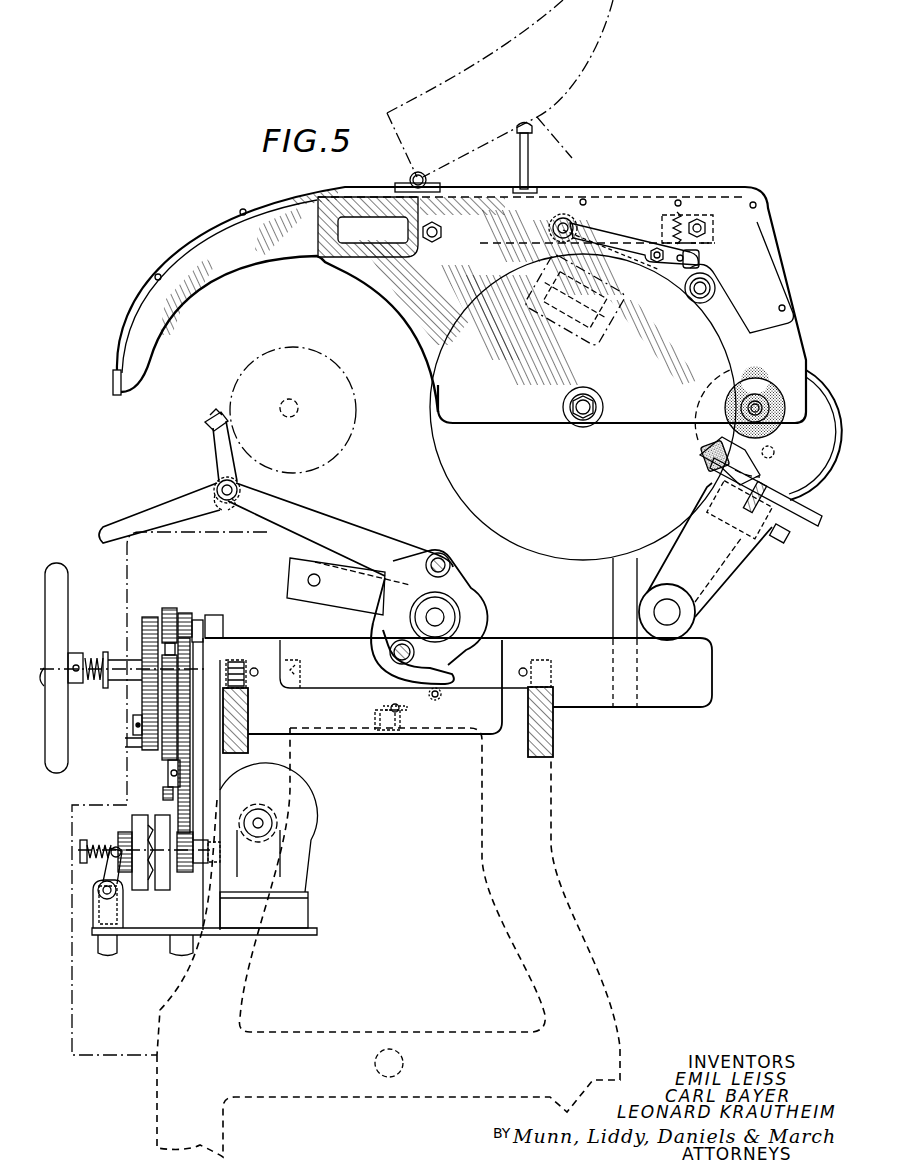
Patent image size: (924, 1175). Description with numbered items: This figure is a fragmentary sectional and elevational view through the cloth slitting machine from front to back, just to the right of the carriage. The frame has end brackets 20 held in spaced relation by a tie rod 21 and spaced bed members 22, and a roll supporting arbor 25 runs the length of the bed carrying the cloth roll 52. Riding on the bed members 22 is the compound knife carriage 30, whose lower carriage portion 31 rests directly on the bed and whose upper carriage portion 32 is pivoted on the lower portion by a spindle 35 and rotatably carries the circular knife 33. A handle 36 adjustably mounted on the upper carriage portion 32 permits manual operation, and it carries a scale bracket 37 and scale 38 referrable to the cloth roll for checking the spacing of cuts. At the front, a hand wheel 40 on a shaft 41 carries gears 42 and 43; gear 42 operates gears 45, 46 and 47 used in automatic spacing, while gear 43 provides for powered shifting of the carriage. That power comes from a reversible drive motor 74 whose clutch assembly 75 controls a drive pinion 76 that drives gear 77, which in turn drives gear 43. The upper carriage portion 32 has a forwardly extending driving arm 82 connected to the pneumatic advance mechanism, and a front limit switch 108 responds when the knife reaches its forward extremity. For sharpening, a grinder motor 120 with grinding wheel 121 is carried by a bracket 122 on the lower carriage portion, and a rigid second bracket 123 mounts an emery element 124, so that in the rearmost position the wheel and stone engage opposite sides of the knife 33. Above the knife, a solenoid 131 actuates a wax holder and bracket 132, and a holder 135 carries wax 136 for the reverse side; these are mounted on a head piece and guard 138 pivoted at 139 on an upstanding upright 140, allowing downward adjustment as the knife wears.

The end brackets 20 is at (255, 968).
The tie rod 21 is at (389, 1049).
The bed members 22 is at (250, 712).
The arbor 25 is at (292, 418).
The compound knife carriage 30 is at (254, 629).
The lower carriage portion 31 is at (422, 743).
The upper carriage portion 32 is at (455, 519).
The circular knife 33 is at (583, 407).
The spindle 35 is at (447, 618).
The handle 36 is at (150, 513).
The scale bracket 37 is at (218, 458).
The scale 38 is at (208, 410).
The hand wheel 40 is at (68, 605).
The shaft 41 is at (121, 677).
The gear 42 is at (142, 635).
The gear 43 is at (189, 615).
The gear 45 is at (140, 743).
The gear 46 is at (165, 752).
The gear 47 is at (170, 609).
The cloth roll 52 is at (325, 356).
The drive motor 74 is at (311, 814).
The clutch assembly 75 is at (111, 815).
The drive pinion 76 is at (184, 872).
The gear 77 is at (178, 808).
The driving arm 82 is at (334, 591).
The front limit switch 108 is at (389, 718).
The grinder motor 120 is at (815, 417).
The grinding wheel 121 is at (778, 433).
The bracket 122 is at (783, 538).
The second bracket 123 is at (737, 577).
The emery element 124 is at (703, 458).
The solenoid 131 is at (600, 323).
The wax holder and bracket 132 is at (670, 272).
The holder 135 is at (701, 259).
The wax 136 is at (716, 287).
The head piece and guard 138 is at (545, 202).
The pivot 139 is at (575, 220).
The upright 140 is at (612, 597).